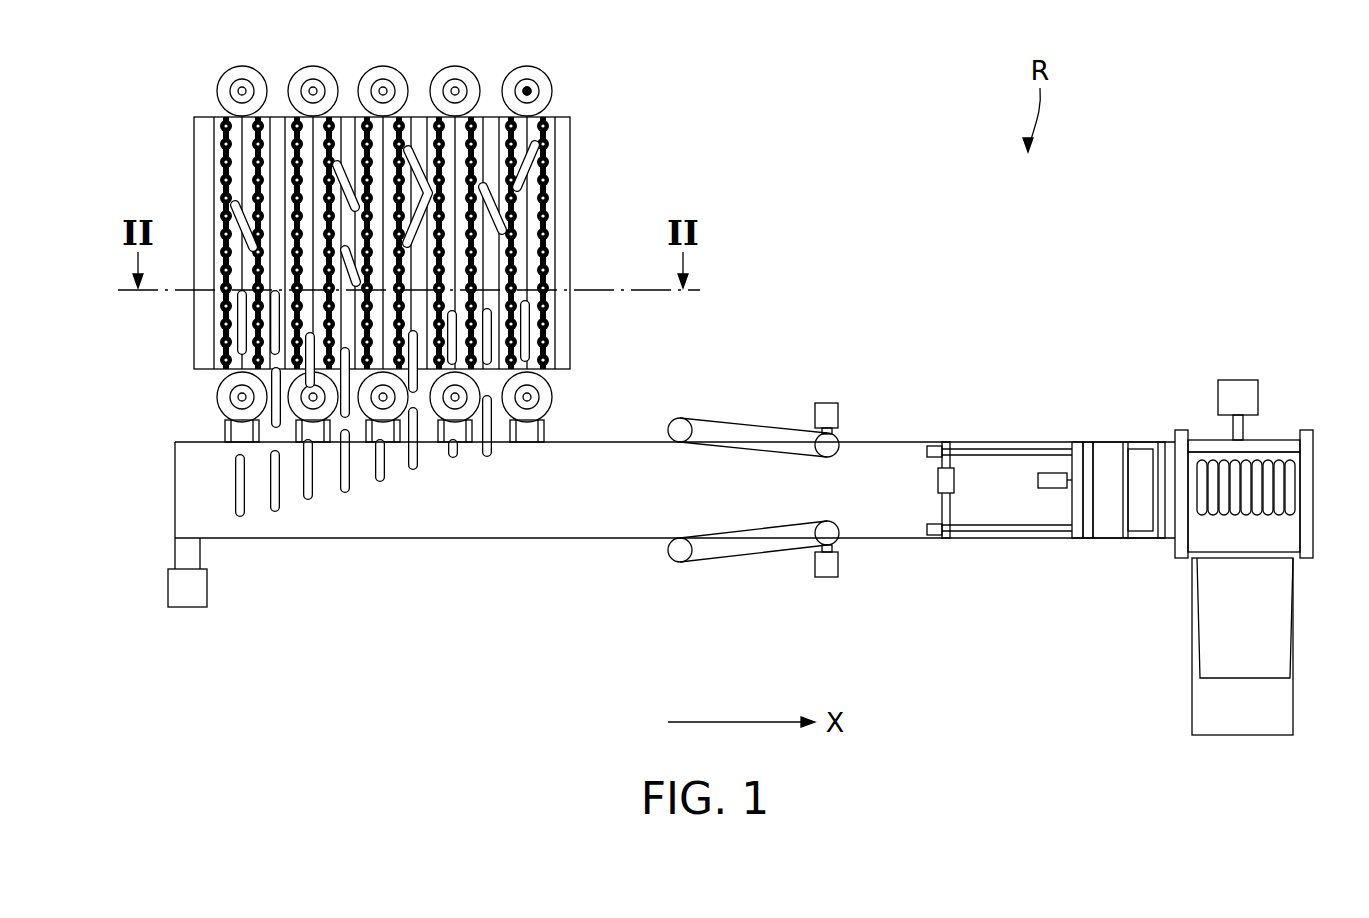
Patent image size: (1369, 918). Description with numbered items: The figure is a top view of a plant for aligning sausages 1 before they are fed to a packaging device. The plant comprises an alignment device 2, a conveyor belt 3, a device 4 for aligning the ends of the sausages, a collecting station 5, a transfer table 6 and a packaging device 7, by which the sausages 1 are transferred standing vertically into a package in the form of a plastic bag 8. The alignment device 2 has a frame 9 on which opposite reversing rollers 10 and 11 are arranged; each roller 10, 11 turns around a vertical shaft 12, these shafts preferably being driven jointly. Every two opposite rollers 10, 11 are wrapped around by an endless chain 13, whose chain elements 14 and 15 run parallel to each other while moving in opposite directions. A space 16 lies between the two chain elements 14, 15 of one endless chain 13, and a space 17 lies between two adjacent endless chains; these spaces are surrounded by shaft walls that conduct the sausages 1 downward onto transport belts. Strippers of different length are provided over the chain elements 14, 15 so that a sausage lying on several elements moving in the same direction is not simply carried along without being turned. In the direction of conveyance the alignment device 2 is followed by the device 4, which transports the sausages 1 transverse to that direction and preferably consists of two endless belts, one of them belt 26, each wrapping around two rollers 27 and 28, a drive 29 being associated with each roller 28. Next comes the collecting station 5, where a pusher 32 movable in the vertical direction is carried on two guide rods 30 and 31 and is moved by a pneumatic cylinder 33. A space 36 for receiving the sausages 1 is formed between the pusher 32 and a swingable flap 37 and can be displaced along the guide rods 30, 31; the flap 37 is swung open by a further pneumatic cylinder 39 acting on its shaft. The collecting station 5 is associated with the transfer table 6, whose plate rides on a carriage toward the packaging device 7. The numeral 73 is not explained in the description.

The sausages 1 is at (548, 193).
The alignment device 2 is at (630, 95).
The conveyor belt 3 is at (587, 525).
The device for the end alignment of the sausages 4 is at (764, 370).
The collecting station 5 is at (997, 396).
The transfer table 6 is at (1128, 333).
The packaging device 7 is at (1314, 353).
The plastic bag 8 is at (1293, 703).
The frame 9 is at (585, 348).
The reversing roller 10 is at (458, 70).
The reversing roller 11 is at (500, 447).
The vertical shaft 12 is at (530, 90).
The endless chain 13 is at (565, 205).
The chain element 14 is at (548, 227).
The chain element 15 is at (548, 253).
The space between two chain elements 16 is at (238, 160).
The space between two adjacent endless chains 17 is at (272, 118).
The endless belt 26 is at (733, 555).
The roller 27 is at (690, 420).
The roller 28 is at (830, 403).
The drive 29 is at (840, 442).
The guide rod 30 is at (1000, 540).
The guide rod 31 is at (956, 440).
The pusher 32 is at (950, 528).
The pneumatic cylinder 33 is at (954, 480).
The space for receiving the sausages 36 is at (1045, 527).
The swingable flap 37 is at (1078, 446).
The pneumatic cylinder 39 is at (1053, 472).
The chain segment 73 is at (548, 335).